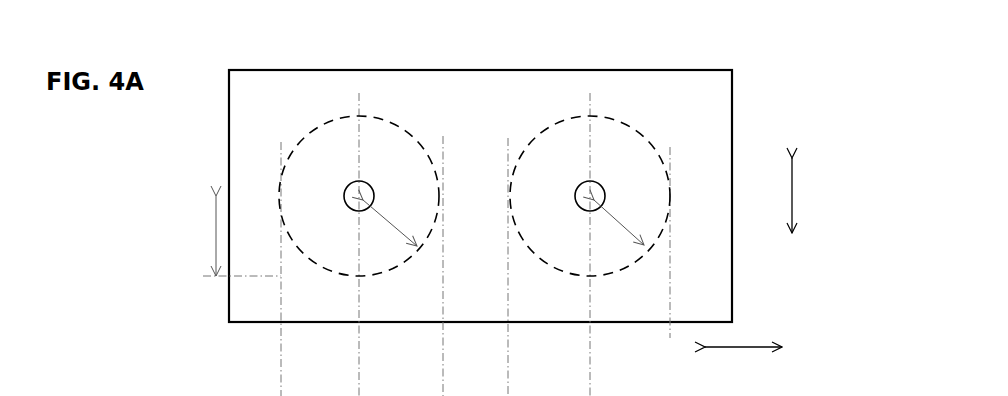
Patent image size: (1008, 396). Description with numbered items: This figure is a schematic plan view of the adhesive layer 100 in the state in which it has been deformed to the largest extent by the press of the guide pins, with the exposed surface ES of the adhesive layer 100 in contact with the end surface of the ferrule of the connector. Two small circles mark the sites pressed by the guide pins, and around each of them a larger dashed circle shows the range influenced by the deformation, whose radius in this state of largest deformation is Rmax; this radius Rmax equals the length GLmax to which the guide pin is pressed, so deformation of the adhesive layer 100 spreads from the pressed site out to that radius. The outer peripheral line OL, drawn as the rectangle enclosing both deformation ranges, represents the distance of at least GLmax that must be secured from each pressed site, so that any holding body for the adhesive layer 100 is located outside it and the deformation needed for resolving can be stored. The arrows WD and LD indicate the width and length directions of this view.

The adhesive layer 100 is at (409, 89).
The exposed surface ES is at (513, 105).
The outer peripheral line OL is at (707, 70).
The radius of range influenced by deformation in the state of having largest deforma Rmax is at (405, 236).
The width direction WD is at (814, 195).
The length direction LD is at (743, 358).